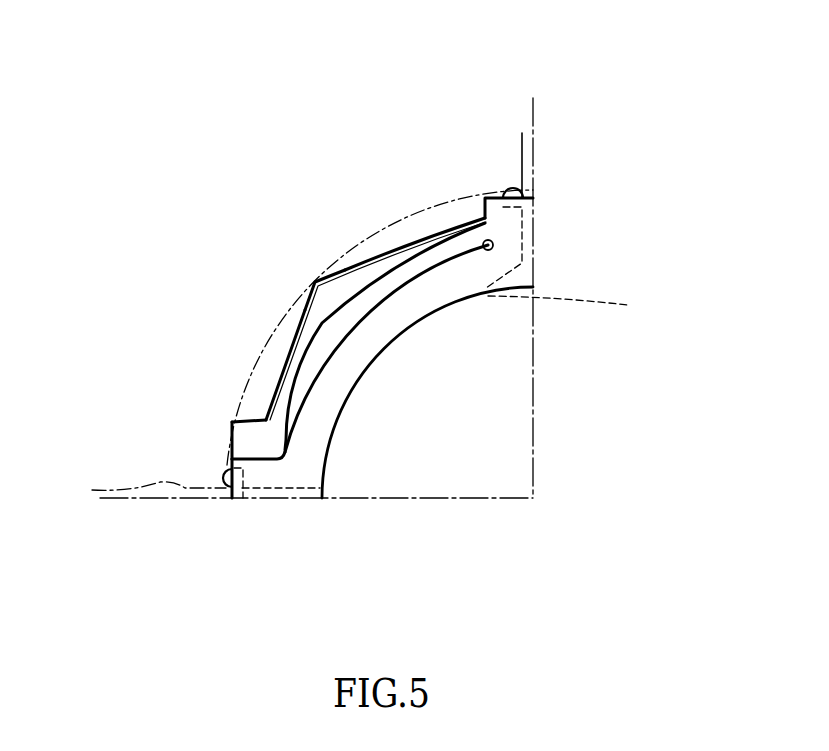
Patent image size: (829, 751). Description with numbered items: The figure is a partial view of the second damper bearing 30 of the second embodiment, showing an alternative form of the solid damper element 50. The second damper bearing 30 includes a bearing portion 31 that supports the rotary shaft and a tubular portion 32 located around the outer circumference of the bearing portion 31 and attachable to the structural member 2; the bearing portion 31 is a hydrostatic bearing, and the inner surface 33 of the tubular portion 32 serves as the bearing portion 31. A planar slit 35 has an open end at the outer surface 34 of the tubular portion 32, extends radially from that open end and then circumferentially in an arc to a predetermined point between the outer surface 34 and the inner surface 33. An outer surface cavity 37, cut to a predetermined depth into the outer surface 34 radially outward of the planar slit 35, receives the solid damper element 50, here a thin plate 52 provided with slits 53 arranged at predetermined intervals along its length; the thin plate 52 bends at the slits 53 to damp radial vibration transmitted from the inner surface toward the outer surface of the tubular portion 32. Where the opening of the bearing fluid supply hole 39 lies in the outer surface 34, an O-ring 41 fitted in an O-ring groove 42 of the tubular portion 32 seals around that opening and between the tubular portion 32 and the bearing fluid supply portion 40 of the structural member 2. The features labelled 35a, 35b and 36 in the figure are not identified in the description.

The structural member 2 is at (420, 154).
The second damper bearing 30 is at (365, 315).
The bearing portion 31 is at (435, 454).
The tubular portion 32 is at (231, 429).
The inner surface 33 is at (418, 330).
The outer surface 34 is at (229, 457).
The planar slit 35 is at (337, 349).
The lip base 35a is at (226, 460).
The lip tip 35b is at (486, 251).
The fitting projection 36 is at (503, 193).
The outer surface cavity 37 is at (320, 322).
The bearing fluid supply hole 39 is at (305, 555).
The bearing fluid supply portion 40 is at (522, 147).
The O-ring 41 is at (462, 412).
The O-ring groove 42 is at (367, 414).
The solid damper element 50 is at (378, 248).
The thin plate 52 is at (378, 257).
The slits 53 is at (315, 280).